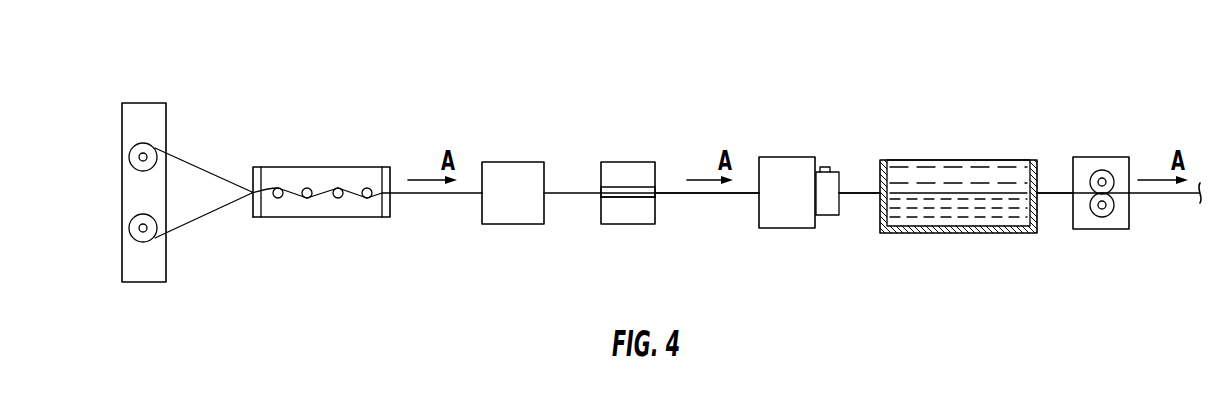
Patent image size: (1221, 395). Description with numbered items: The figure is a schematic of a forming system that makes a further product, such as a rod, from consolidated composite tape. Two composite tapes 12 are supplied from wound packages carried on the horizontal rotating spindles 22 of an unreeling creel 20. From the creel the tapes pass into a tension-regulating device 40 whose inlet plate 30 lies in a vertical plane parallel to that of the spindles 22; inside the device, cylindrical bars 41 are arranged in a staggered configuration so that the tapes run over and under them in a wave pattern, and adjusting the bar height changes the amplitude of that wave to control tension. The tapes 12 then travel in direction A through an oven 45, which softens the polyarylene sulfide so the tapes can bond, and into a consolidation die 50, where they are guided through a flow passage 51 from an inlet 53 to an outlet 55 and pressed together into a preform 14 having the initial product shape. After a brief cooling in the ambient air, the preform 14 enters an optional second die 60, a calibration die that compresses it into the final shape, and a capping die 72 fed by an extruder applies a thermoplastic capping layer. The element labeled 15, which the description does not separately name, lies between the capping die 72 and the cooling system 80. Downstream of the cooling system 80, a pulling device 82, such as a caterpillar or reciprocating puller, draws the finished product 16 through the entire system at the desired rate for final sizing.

The composite tapes 12 is at (192, 158).
The preform 14 is at (698, 194).
The treated yarn 15 is at (853, 192).
The finished product 16 is at (1047, 187).
The creel 20 is at (137, 118).
The rotating spindles 22 is at (142, 242).
The inlet plate 30 is at (254, 218).
The tension-regulating device 40 is at (320, 167).
The cylindrical bars 41 is at (339, 198).
The oven 45 is at (502, 173).
The consolidation die 50 is at (617, 170).
The flow passage 51 is at (632, 200).
The inlet 53 is at (600, 194).
The outlet 55 is at (657, 188).
The second die 60 is at (775, 170).
The capping die 72 is at (825, 216).
The cooling system 80 is at (978, 234).
The pulling device 82 is at (1100, 230).